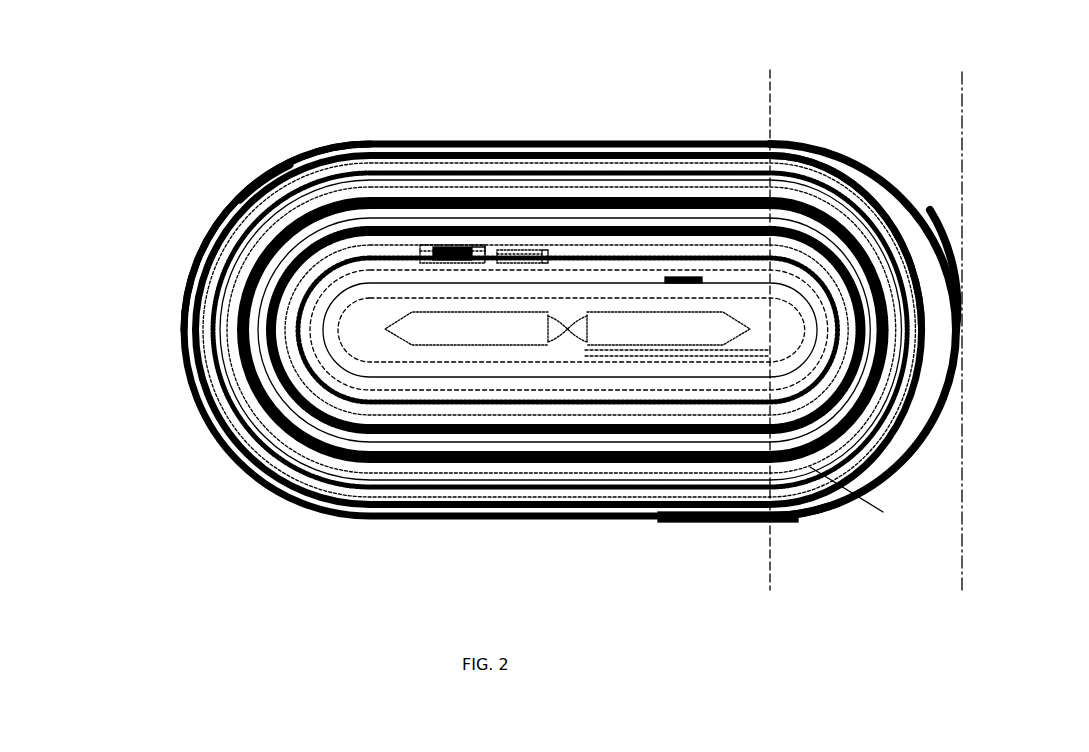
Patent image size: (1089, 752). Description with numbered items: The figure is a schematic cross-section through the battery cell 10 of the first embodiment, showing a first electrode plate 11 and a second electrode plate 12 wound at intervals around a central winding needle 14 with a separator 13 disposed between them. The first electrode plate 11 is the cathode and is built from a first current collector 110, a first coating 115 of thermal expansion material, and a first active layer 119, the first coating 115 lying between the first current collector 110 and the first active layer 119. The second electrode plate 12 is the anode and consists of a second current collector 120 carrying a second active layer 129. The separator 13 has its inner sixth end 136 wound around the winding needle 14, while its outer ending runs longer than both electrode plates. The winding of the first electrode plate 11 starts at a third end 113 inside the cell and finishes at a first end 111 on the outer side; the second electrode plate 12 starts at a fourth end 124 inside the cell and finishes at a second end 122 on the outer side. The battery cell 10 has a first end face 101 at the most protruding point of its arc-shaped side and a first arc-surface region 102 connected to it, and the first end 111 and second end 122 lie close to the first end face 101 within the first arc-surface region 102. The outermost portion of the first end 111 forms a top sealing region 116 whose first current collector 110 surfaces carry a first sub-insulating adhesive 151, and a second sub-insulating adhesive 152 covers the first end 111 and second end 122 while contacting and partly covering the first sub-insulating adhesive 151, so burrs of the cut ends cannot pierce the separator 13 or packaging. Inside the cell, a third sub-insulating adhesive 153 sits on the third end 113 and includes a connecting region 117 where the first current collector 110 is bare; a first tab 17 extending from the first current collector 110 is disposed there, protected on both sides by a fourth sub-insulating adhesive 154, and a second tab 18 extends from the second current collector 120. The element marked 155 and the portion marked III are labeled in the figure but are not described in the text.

The battery cell 10 is at (450, 53).
The first end face 101 is at (960, 327).
The first arc-surface region 102 is at (881, 73).
The second sub-insulating adhesive 152 is at (961, 302).
The first sub-insulating adhesive 151 is at (923, 257).
The top sealing region 116 is at (740, 522).
The first end 111 is at (790, 517).
The second electrode plate 12 is at (258, 130).
The second active layer 129 is at (246, 189).
The second current collector 120 is at (300, 172).
The third sub-insulating adhesive 153 is at (238, 254).
The first electrode plate 11 is at (134, 278).
The first active layer 119 is at (213, 291).
The first coating 115 is at (240, 311).
The first current collector 110 is at (227, 326).
The second end 122 is at (812, 483).
The separator 13 is at (300, 370).
The fourth end 124 is at (748, 283).
The first tab 17 is at (420, 250).
The fourth sub-insulating adhesive 154 is at (434, 247).
The connecting region 117 is at (473, 247).
The third end 113 is at (500, 250).
The tab connecting portion 155 is at (546, 256).
The second tab 18 is at (683, 277).
The winding needle 14 is at (470, 332).
The sixth end 136 is at (547, 320).
The section line III is at (856, 497).